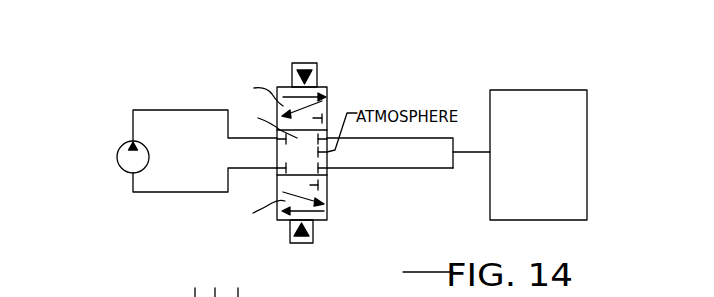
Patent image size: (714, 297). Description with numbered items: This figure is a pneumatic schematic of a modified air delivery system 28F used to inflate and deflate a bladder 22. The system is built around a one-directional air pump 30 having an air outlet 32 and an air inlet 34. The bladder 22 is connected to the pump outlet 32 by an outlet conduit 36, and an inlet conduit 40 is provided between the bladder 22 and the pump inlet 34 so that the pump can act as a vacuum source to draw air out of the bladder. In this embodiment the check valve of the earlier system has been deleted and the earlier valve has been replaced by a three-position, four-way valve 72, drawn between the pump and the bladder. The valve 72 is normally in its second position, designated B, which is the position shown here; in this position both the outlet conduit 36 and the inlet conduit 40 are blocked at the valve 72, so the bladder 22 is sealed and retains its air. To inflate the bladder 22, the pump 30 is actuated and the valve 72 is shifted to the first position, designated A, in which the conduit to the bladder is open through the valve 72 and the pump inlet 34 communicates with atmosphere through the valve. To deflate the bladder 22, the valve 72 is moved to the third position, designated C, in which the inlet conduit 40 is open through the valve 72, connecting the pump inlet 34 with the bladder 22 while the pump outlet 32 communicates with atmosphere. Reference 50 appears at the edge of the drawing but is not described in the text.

The bladder 22 is at (540, 90).
The air delivery system 28F is at (409, 74).
The air pump 30 is at (117, 157).
The air outlet 32 is at (133, 118).
The air inlet 34 is at (130, 185).
The outlet conduit 36 is at (394, 143).
The inlet conduit 40 is at (383, 170).
The circuit elements 50 is at (248, 296).
The three-position, four-way valve 72 is at (318, 72).